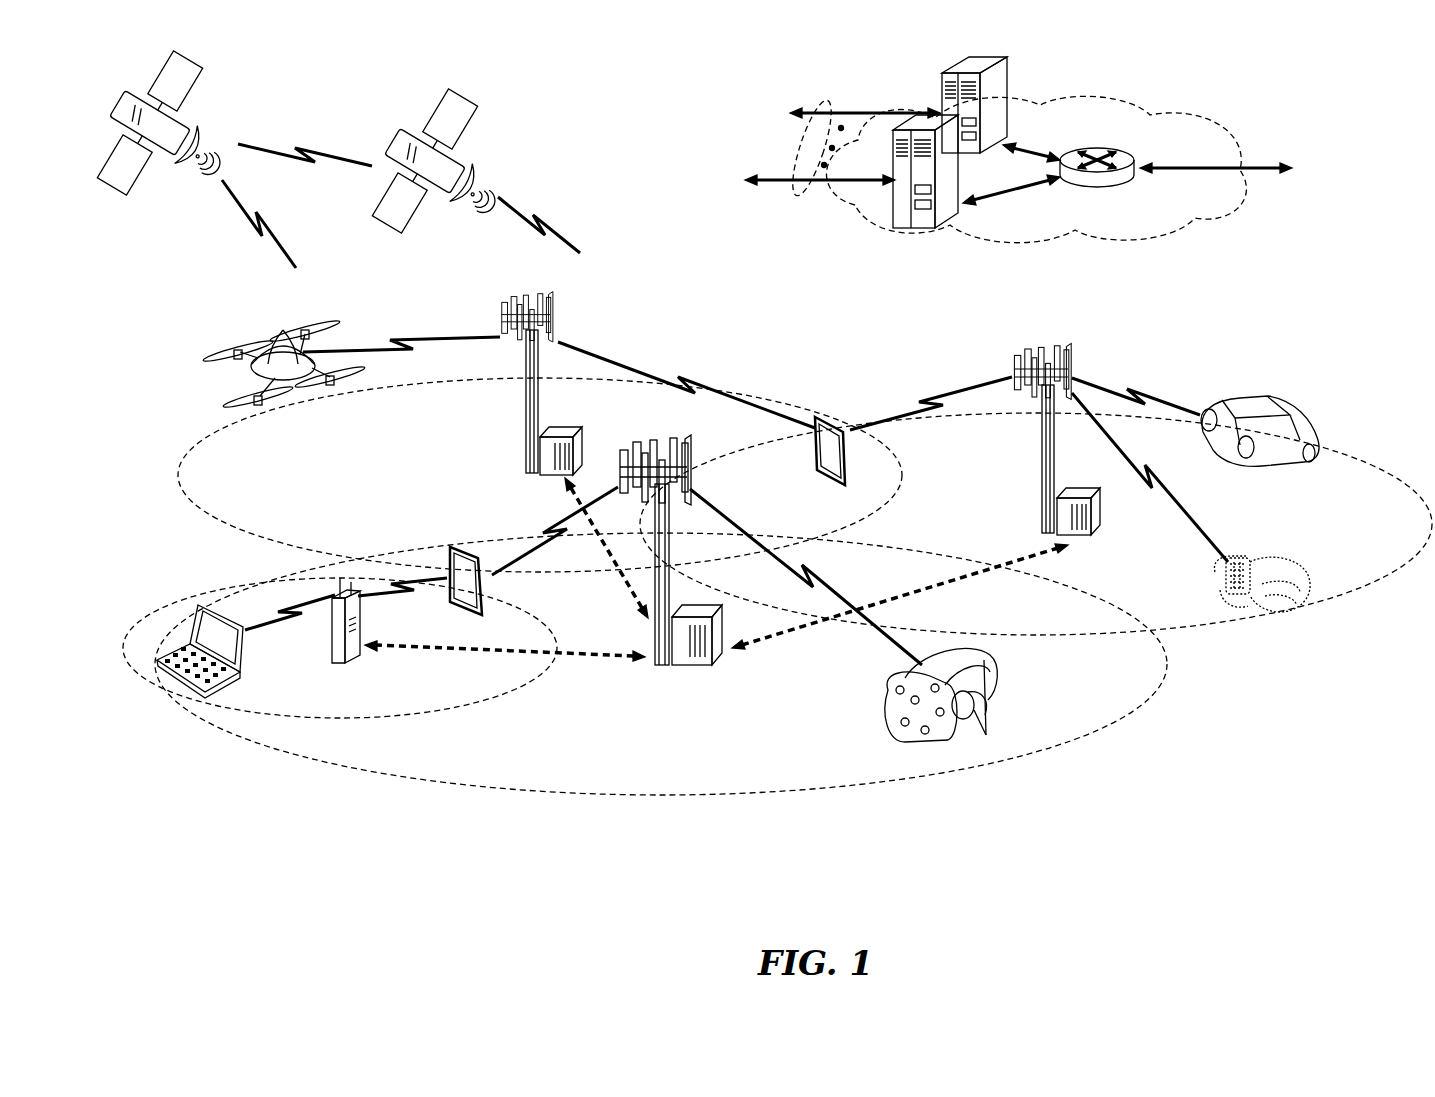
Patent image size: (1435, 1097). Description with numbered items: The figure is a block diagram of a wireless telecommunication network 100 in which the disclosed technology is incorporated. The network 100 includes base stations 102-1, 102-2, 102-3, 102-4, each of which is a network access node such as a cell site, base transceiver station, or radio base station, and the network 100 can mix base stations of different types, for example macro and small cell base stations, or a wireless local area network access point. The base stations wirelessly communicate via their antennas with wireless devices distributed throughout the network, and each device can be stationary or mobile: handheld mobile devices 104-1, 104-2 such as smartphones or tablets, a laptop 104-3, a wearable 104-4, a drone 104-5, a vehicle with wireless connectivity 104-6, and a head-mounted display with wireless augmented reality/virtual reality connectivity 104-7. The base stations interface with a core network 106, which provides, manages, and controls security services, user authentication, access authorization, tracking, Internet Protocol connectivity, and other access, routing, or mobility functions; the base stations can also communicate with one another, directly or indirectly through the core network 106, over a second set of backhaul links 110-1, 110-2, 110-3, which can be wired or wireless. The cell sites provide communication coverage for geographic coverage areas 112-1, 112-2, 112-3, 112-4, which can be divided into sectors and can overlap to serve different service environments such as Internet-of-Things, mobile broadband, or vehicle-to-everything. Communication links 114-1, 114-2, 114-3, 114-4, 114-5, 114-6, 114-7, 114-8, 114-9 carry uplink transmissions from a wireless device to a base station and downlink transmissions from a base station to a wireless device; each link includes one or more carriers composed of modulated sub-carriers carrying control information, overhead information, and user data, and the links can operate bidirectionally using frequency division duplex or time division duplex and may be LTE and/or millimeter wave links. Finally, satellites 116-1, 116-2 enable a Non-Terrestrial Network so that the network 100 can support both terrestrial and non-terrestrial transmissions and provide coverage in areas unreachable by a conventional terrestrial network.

The wireless telecommunication network 100 is at (1363, 128).
The base station 102-1 is at (660, 665).
The base station 102-2 is at (522, 420).
The base station 102-3 is at (1040, 455).
The base station 102-4 is at (332, 653).
The handheld mobile device 104-1 is at (527, 590).
The handheld mobile device 104-2 is at (812, 455).
The laptop 104-3 is at (183, 685).
The wearable 104-4 is at (1238, 560).
The drone 104-5 is at (292, 385).
The vehicle with wireless connectivity 104-6 is at (1318, 385).
The head-mounted display 104-7 is at (993, 677).
The core network 106 is at (1130, 233).
The backhaul link 110-1 is at (400, 650).
The backhaul link 110-2 is at (960, 575).
The backhaul link 110-3 is at (620, 573).
The geographic coverage area 112-1 is at (585, 795).
The geographic coverage area 112-2 is at (465, 707).
The geographic coverage area 112-3 is at (245, 527).
The geographic coverage area 112-4 is at (1320, 455).
The communication link 114-1 is at (815, 578).
The communication link 114-2 is at (545, 522).
The communication link 114-3 is at (277, 628).
The communication link 114-4 is at (422, 595).
The communication link 114-5 is at (410, 337).
The communication link 114-6 is at (690, 370).
The communication link 114-7 is at (940, 398).
The communication link 114-8 is at (1165, 500).
The communication link 114-9 is at (1132, 386).
The satellite 116-1 is at (207, 132).
The satellite 116-2 is at (475, 168).